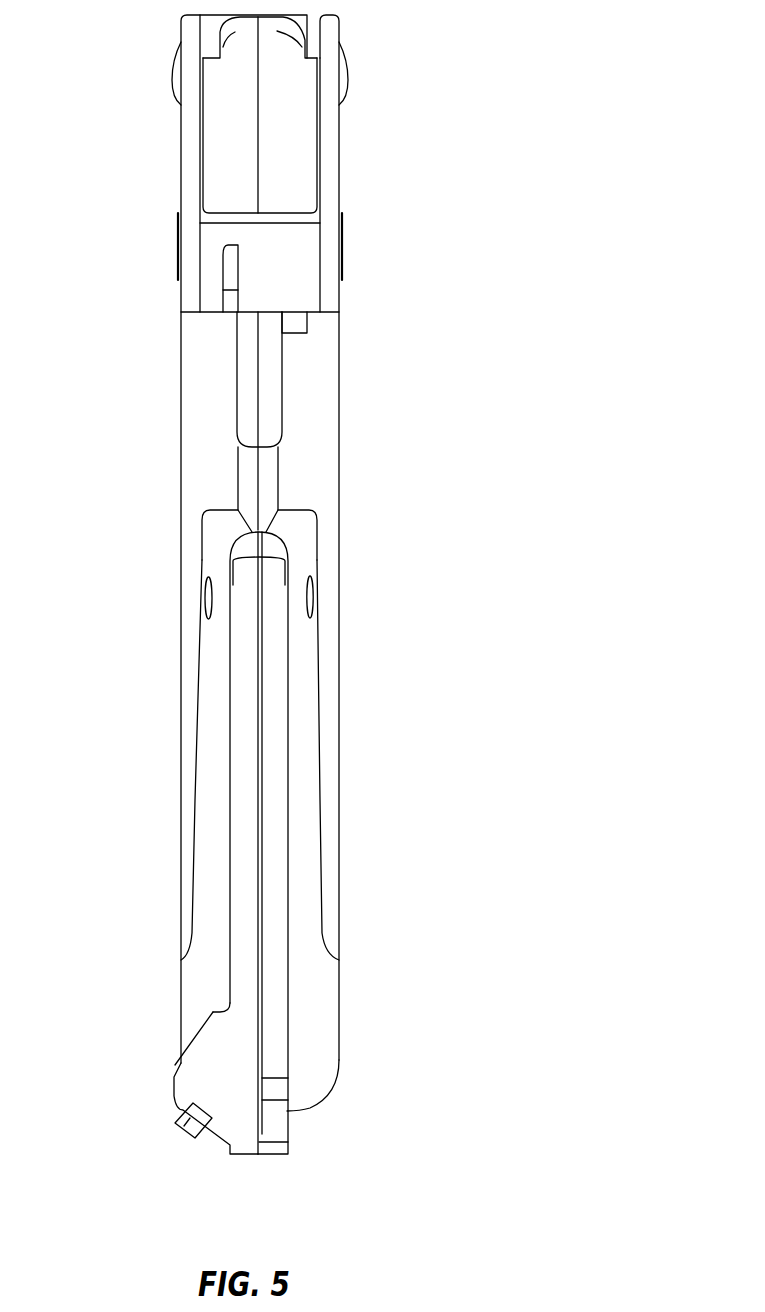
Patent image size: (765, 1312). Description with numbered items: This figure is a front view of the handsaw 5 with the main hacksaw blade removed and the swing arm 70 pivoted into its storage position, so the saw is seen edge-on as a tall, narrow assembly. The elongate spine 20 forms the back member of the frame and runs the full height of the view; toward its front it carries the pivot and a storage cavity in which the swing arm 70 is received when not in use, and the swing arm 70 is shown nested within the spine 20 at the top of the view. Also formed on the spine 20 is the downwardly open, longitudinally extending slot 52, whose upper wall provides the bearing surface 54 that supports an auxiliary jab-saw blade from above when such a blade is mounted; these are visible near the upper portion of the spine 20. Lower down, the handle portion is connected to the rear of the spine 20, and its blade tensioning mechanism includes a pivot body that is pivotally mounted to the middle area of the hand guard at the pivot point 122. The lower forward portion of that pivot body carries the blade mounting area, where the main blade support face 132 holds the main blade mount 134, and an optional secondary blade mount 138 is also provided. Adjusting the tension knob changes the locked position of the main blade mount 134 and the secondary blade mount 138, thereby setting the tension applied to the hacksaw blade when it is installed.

The handsaw 5 is at (262, 602).
The spine 20 is at (328, 130).
The swing arm 70 is at (225, 113).
The slot 52 is at (229, 275).
The bearing surface 54 is at (224, 260).
The pivot point 122 is at (310, 597).
The main blade support face 132 is at (262, 1115).
The main blade mount 134 is at (277, 1085).
The secondary blade mount 138 is at (178, 1123).